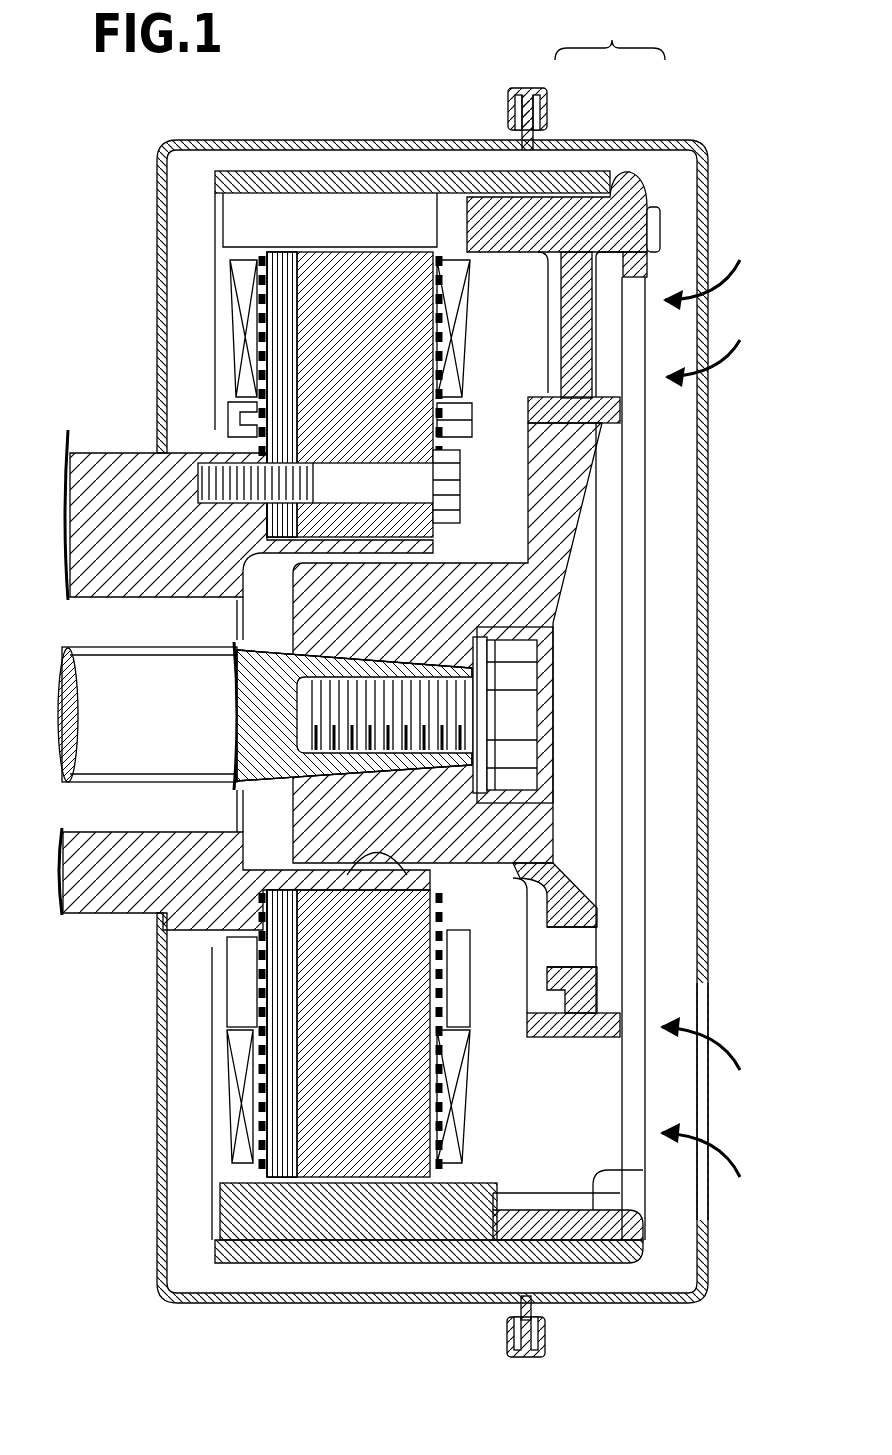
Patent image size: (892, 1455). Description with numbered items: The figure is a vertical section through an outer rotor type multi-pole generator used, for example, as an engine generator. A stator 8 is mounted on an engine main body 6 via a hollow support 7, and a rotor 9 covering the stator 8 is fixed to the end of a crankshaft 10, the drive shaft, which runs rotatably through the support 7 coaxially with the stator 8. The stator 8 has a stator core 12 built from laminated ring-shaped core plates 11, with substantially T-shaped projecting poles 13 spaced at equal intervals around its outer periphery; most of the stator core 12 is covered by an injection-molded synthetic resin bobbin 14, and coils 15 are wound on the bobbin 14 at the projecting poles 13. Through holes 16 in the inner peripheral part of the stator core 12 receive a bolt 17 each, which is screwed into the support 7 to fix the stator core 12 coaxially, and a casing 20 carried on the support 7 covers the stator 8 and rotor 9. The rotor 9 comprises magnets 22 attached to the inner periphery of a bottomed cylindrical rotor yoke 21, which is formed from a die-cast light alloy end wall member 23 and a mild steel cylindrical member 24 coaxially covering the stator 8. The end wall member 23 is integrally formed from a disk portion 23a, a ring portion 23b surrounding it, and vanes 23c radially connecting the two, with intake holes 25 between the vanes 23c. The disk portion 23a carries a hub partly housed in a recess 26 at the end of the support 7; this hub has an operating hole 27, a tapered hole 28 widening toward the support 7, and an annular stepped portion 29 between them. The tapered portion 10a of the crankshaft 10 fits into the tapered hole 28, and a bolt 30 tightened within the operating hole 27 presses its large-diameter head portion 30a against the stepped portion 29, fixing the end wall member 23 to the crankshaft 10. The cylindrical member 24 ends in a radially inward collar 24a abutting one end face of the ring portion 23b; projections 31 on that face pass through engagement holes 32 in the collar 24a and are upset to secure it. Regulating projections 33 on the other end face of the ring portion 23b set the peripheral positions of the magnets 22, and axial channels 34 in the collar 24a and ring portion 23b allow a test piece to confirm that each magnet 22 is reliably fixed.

The engine main body 6 is at (113, 452).
The hollow support 7 is at (110, 900).
The stator 8 is at (229, 357).
The rotor 9 is at (329, 150).
The crankshaft 10 is at (93, 740).
The tapered portion 10a is at (368, 650).
The core plates 11 is at (298, 257).
The stator core 12 is at (370, 387).
The projecting poles 13 is at (385, 262).
The bobbin 14 is at (240, 1017).
The coils 15 is at (467, 1113).
The through holes 16 is at (327, 480).
The bolt 17 is at (453, 487).
The casing 20 is at (160, 230).
The rotor yoke 21 is at (610, 34).
The magnets 22 is at (240, 238).
The end wall member 23 is at (476, 545).
The disk portion 23a is at (538, 430).
The ring portion 23b is at (508, 207).
The vanes 23c is at (548, 308).
The cylindrical member 24 is at (543, 171).
The collar 24a is at (643, 1217).
The intake holes 25 is at (590, 1062).
The recess 26 is at (360, 862).
The operating hole 27 is at (520, 630).
The tapered hole 28 is at (317, 653).
The annular stepped portion 29 is at (515, 657).
The bolt 30 is at (313, 717).
The large-diameter head portion 30a is at (527, 760).
The projections 31 is at (660, 238).
The engagement holes 32 is at (660, 220).
The regulating projections 33 is at (427, 190).
The channels 34 is at (647, 1172).